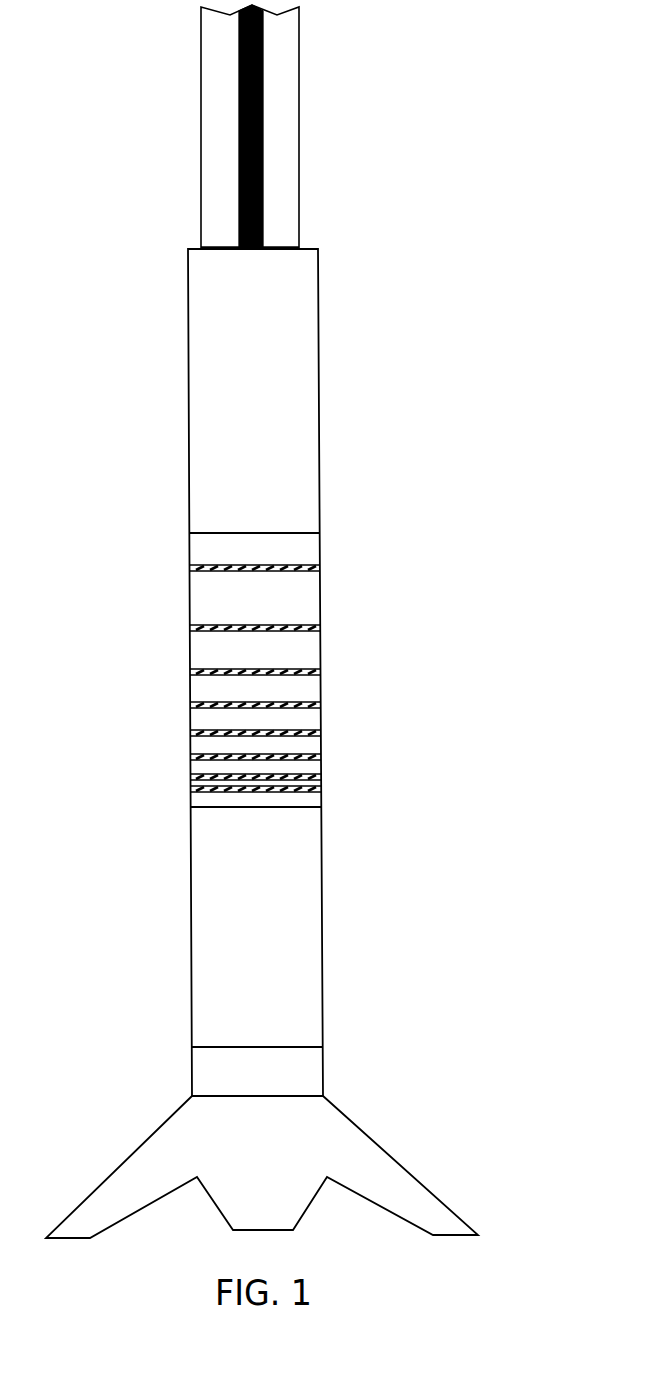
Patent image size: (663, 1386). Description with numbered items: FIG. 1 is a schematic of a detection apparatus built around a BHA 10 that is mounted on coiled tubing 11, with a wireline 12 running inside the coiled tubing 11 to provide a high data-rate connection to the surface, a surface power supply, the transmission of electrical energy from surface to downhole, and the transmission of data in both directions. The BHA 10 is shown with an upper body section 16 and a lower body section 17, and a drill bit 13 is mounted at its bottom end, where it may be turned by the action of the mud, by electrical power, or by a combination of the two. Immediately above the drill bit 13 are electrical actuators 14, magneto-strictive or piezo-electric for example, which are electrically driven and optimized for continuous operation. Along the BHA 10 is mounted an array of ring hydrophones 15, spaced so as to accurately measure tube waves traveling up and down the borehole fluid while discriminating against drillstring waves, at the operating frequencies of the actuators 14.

The BHA 10 is at (440, 415).
The coiled tubing 11 is at (300, 133).
The wireline 12 is at (239, 186).
The drill bit 13 is at (413, 1175).
The electrical actuators 14 is at (272, 1088).
The ring hydrophones 15 is at (321, 788).
The upper body section 16 is at (269, 385).
The lower body section 17 is at (270, 930).